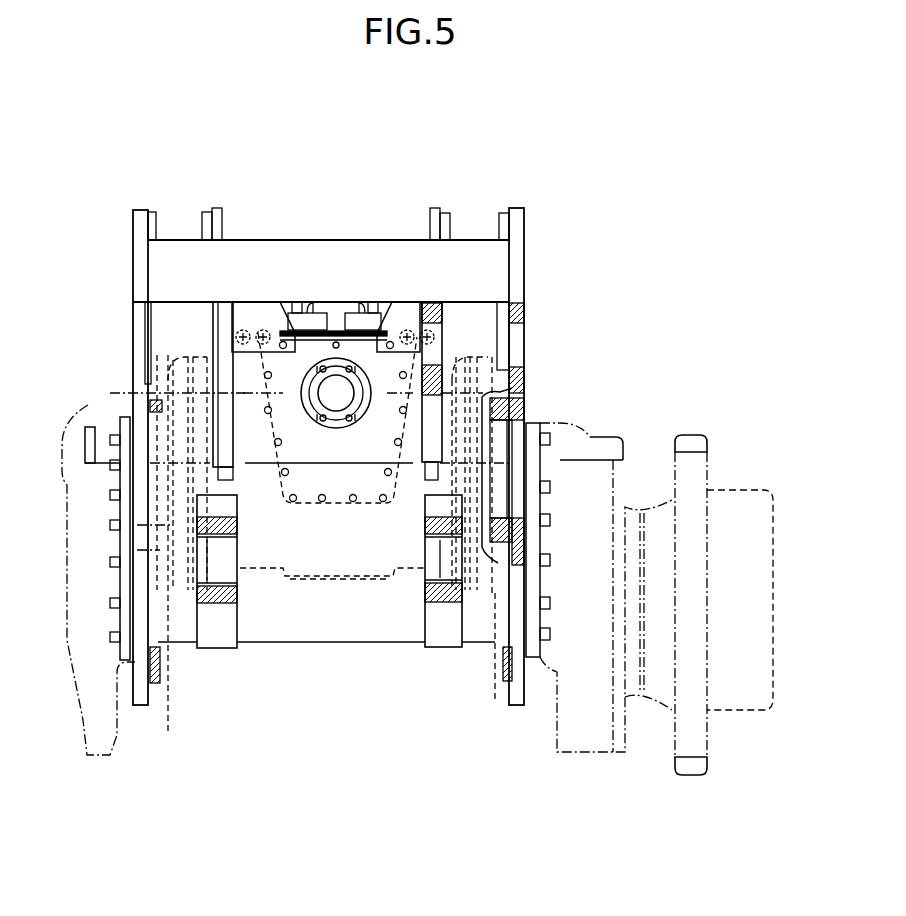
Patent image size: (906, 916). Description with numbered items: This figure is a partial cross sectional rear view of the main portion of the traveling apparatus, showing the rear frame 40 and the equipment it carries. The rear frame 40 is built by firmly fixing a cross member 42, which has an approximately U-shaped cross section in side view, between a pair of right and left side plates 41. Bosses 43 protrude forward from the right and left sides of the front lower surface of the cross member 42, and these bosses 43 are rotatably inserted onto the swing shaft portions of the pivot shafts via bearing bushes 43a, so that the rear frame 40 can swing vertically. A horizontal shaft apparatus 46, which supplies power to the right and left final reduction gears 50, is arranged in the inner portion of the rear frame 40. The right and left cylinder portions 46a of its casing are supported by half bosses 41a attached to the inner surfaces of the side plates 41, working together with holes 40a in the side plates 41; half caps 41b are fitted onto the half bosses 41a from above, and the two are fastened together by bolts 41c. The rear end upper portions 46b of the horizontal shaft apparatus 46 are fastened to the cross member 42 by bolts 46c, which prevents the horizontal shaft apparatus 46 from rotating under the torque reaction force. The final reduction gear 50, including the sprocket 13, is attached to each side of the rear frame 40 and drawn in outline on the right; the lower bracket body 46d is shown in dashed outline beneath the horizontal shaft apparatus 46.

The sprocket 13 is at (693, 442).
The rear frame 40 is at (526, 226).
The hole of side plate 40a is at (600, 508).
The side plate 41 is at (138, 272).
The half boss 41a is at (166, 682).
The half cap 41b is at (147, 397).
The bolt 41c is at (135, 375).
The cross member 42 is at (463, 320).
The boss 43 is at (222, 637).
The bearing bush 43a is at (240, 590).
The horizontal shaft apparatus 46 is at (333, 325).
The cylinder portion 46a is at (152, 490).
The rear end upper portion 46b is at (264, 333).
The bolt 46c is at (240, 330).
The bracket body 46d is at (337, 393).
The final reduction gear 50 is at (735, 487).